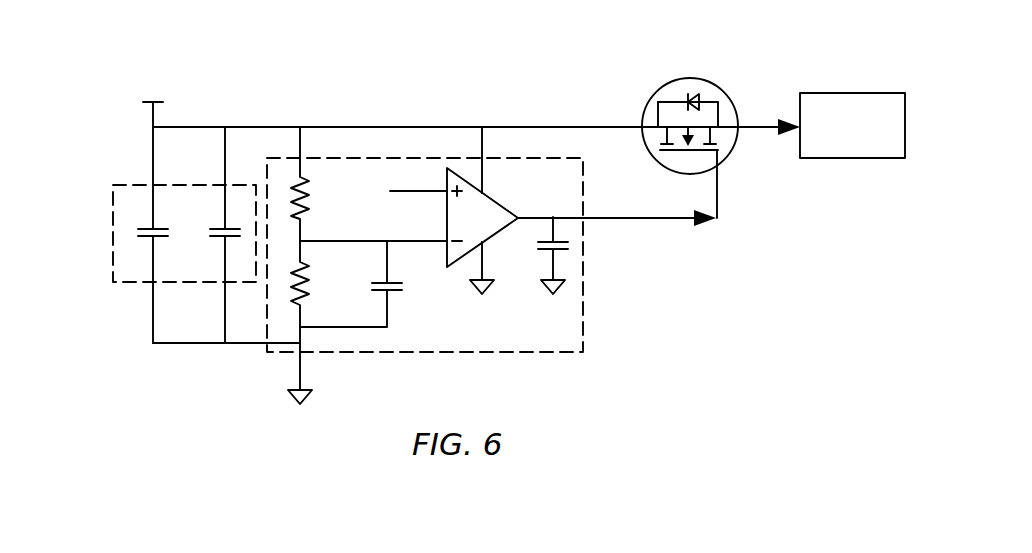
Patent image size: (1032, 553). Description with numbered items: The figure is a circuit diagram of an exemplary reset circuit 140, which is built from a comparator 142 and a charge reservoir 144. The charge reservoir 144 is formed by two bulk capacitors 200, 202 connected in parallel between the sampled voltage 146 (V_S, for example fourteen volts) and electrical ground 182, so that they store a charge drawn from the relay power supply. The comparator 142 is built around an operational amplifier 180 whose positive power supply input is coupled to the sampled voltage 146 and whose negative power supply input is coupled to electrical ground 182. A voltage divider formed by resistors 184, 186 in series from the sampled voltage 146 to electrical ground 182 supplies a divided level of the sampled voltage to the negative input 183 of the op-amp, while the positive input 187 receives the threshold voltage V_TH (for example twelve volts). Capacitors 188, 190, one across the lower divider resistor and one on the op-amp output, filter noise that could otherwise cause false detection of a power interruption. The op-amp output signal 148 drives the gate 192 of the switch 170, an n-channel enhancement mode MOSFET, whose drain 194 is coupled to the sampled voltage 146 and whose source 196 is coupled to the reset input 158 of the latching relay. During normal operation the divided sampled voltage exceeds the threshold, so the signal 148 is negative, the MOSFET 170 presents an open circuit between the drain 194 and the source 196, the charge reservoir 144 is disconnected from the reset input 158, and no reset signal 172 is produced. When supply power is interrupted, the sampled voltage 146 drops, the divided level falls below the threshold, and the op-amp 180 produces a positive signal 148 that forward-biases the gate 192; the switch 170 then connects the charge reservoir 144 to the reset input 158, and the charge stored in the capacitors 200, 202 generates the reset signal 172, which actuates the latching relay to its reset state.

The reset circuit 140 is at (127, 44).
The comparator 142 is at (560, 352).
The charge reservoir 144 is at (125, 184).
The sampled voltage 146 is at (152, 115).
The output signal 148 is at (665, 220).
The reset input 158 is at (860, 93).
The switch 170 is at (708, 82).
The reset signal 172 is at (778, 135).
The operational amplifier 180 is at (490, 205).
The electrical ground 182 is at (272, 418).
The negative input 183 is at (447, 238).
The resistor 184 is at (305, 180).
The resistor 186 is at (297, 304).
The positive input 187 is at (445, 185).
The capacitor 188 is at (378, 283).
The capacitor 190 is at (566, 251).
The gate 192 is at (686, 152).
The drain 194 is at (655, 126).
The source 196 is at (728, 118).
The bulk capacitor 200 is at (140, 230).
The bulk capacitor 202 is at (218, 237).